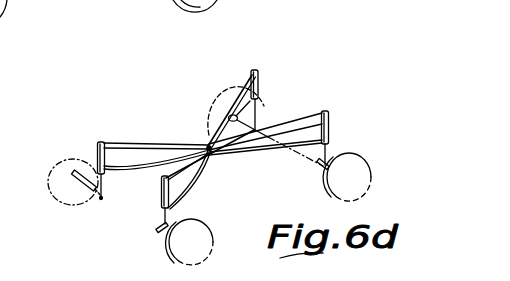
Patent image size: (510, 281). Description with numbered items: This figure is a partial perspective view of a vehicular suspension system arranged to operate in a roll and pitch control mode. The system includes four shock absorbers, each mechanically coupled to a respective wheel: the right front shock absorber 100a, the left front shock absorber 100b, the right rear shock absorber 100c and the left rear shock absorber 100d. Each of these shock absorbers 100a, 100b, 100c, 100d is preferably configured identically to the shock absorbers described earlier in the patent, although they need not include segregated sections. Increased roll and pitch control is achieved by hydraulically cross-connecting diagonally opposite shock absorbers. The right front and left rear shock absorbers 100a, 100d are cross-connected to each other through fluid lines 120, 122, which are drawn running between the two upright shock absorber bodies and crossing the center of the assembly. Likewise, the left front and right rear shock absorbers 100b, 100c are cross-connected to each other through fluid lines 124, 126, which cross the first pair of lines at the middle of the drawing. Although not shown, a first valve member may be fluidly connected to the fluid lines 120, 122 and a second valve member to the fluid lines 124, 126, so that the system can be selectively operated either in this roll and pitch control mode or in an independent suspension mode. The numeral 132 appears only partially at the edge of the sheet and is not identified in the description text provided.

The right front shock absorber 100a is at (95, 152).
The left front shock absorber 100b is at (155, 199).
The right rear shock absorber 100c is at (262, 80).
The left rear shock absorber 100d is at (333, 129).
The fluid line 120 is at (132, 142).
The fluid line 122 is at (296, 120).
The fluid line 124 is at (197, 171).
The fluid line 126 is at (239, 92).
The link bar 132 is at (86, 276).